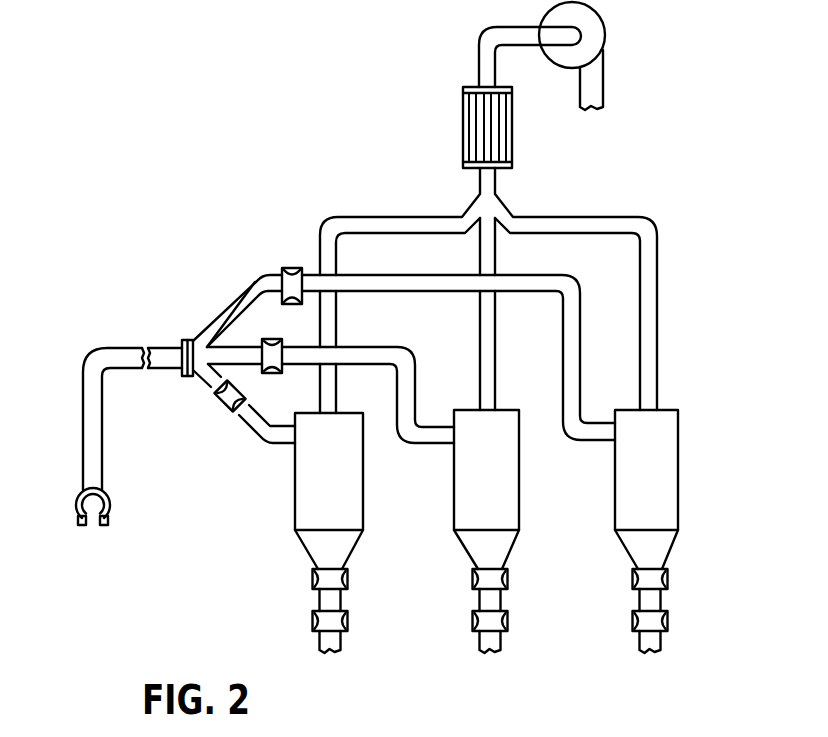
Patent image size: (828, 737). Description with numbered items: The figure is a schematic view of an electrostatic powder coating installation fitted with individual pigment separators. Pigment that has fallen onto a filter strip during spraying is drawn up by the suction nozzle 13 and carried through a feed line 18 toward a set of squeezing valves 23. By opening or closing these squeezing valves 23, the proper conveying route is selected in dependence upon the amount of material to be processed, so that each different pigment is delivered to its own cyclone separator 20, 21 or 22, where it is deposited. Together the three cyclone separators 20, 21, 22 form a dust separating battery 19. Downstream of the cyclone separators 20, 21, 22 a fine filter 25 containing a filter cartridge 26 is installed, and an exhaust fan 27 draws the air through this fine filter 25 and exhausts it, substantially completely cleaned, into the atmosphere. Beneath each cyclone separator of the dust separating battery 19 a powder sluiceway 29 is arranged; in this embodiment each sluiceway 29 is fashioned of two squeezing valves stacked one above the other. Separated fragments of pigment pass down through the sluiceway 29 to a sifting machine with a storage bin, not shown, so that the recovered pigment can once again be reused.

The suction nozzle 13 is at (110, 506).
The feed pipe 18 is at (111, 355).
The dust separating battery 19 is at (300, 563).
The cyclone separator 20 is at (340, 500).
The cyclone separator 21 is at (500, 495).
The cyclone separator 22 is at (664, 495).
The squeezing valves 23 is at (229, 385).
The fine filter 25 is at (490, 130).
The filter cartridge 26 is at (482, 126).
The exhaust fan 27 is at (594, 31).
The powder sluiceway 29 is at (468, 612).